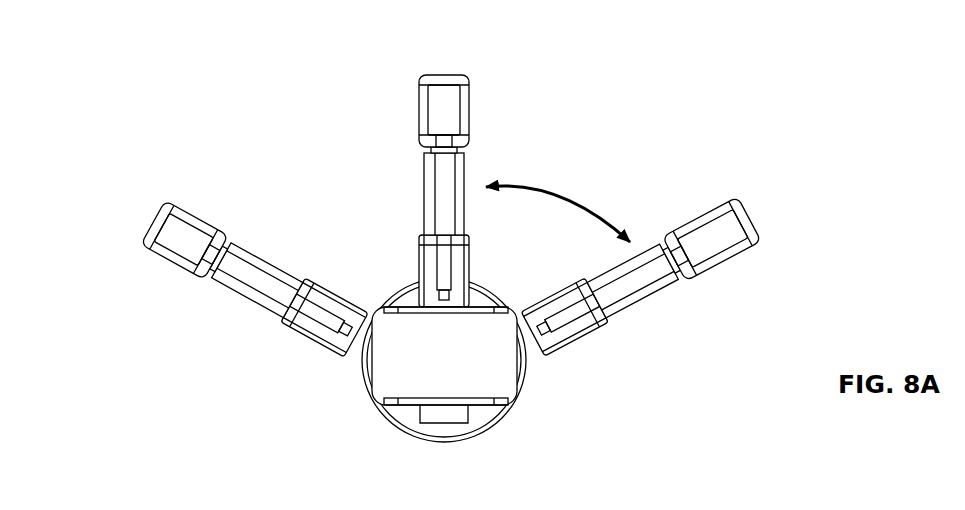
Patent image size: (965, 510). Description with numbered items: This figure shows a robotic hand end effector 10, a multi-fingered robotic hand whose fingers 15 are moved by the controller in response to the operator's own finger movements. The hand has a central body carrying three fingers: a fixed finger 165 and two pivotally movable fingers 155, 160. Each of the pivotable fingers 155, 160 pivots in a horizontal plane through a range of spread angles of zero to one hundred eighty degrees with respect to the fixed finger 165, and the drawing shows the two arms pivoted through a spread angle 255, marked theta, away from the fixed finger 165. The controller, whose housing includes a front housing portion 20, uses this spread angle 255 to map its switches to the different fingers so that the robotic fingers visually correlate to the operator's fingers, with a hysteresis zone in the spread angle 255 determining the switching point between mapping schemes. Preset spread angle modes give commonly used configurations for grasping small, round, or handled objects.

The robotic end effector 10 is at (483, 440).
The fingers 15 is at (429, 208).
The front housing portion 20 is at (138, 506).
The pivotable finger 155 is at (157, 192).
The pivotable finger 160 is at (744, 243).
The fixed finger 165 is at (478, 127).
The spread angle 255 is at (573, 194).